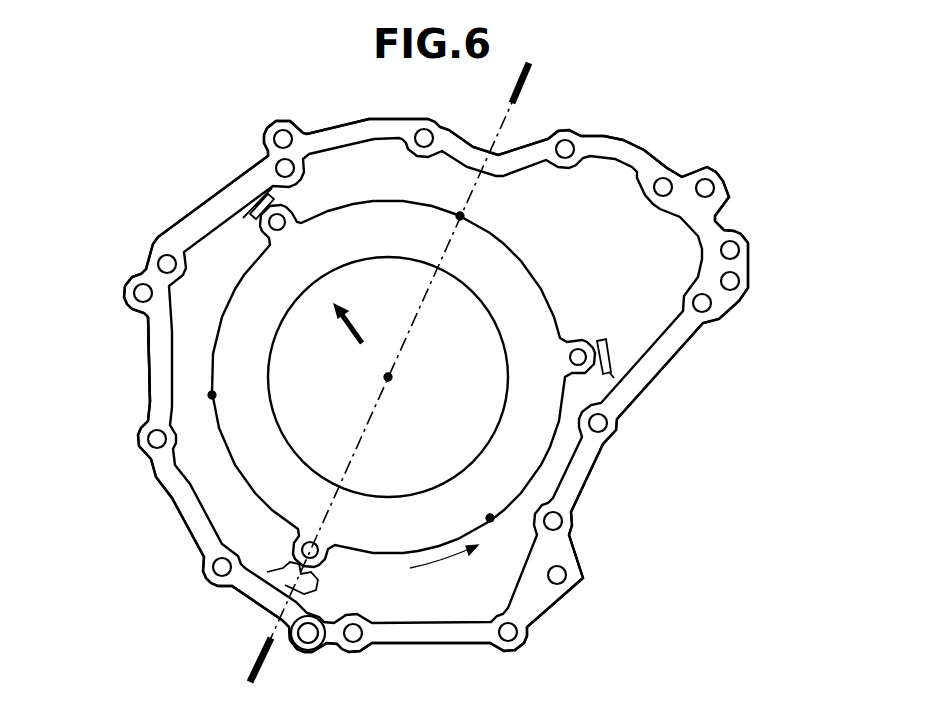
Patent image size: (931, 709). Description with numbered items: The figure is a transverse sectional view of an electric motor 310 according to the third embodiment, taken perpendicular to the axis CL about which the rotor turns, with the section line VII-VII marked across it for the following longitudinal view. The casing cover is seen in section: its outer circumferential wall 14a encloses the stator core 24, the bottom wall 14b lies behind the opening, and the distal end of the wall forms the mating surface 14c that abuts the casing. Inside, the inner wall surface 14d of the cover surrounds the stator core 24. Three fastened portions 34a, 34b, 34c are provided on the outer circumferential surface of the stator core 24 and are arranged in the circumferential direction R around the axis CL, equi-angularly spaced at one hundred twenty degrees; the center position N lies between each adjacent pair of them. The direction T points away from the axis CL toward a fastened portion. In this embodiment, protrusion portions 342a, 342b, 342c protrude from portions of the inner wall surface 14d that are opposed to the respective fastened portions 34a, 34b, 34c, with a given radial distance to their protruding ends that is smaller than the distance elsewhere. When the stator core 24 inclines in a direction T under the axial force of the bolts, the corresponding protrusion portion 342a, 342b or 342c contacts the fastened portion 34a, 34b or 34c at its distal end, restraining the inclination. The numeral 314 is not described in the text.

The electric motor 310 is at (743, 98).
The cover member 314 is at (668, 143).
The outer circumferential wall 14a is at (373, 120).
The bottom wall 14b is at (569, 261).
The mating surface 14c is at (152, 400).
The inner wall surface 14d is at (186, 266).
The stator core 24 is at (346, 277).
The fastened portion 34a is at (321, 556).
The fastened portion 34b is at (264, 231).
The fastened portion 34c is at (568, 340).
The protrusion portion 342a is at (317, 577).
The protrusion portion 342b is at (283, 199).
The protrusion portion 342c is at (608, 338).
The center position N is at (464, 214).
The circumferential direction R is at (460, 560).
The direction T is at (350, 330).
The axis CL is at (391, 381).
The section line VII- VII is at (521, 84).